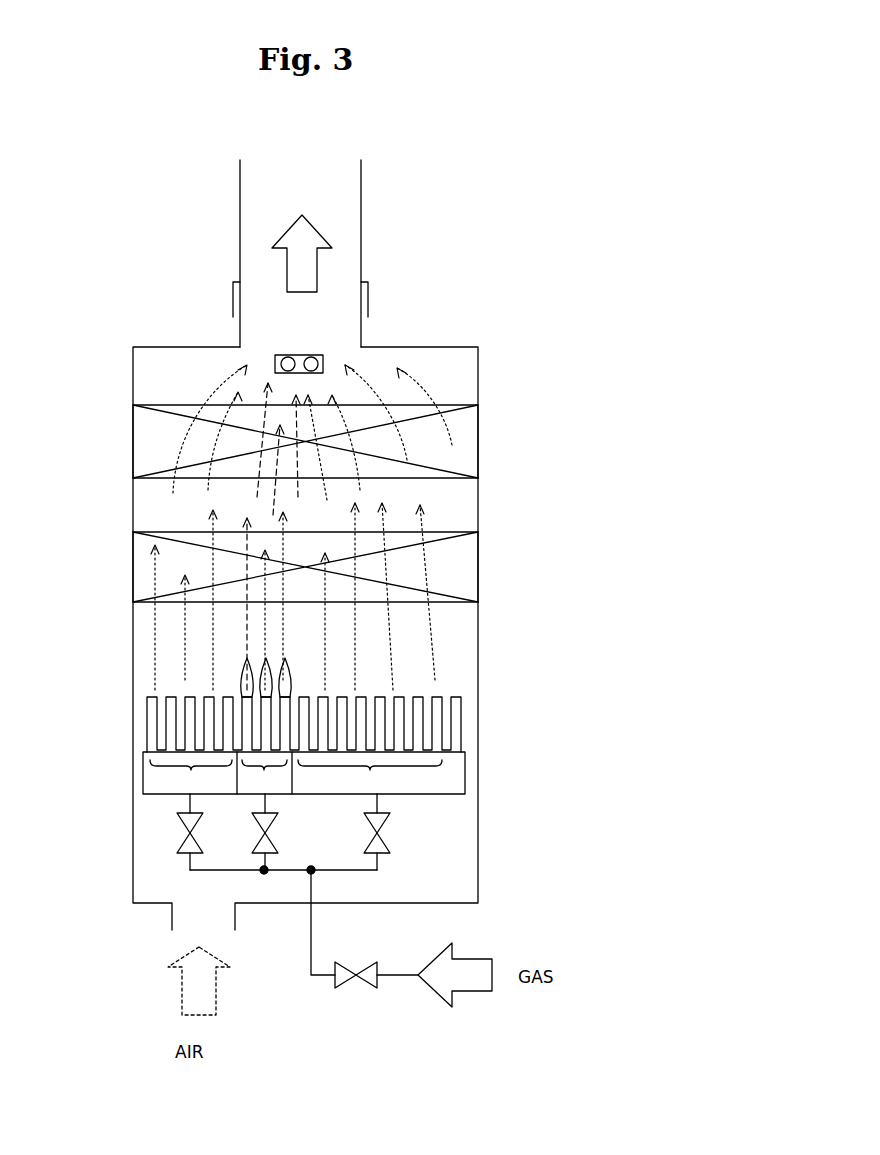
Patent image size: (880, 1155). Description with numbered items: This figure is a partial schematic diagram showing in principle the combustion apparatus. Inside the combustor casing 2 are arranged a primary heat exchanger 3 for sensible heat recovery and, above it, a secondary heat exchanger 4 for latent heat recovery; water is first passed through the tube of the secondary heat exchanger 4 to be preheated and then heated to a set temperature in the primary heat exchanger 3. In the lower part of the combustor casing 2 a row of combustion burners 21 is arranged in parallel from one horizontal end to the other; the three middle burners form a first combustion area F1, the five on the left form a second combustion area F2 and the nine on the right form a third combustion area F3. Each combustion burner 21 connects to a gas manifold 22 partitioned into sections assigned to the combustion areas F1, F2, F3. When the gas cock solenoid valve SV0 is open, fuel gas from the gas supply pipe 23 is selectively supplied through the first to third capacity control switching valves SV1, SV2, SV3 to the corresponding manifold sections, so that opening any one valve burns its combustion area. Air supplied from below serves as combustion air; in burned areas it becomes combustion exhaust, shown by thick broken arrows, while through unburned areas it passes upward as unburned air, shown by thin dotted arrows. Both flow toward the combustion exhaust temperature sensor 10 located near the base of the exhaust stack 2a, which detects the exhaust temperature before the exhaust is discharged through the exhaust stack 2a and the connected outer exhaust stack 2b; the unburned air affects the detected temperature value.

The combustor casing 2 is at (133, 508).
The exhaust stack 2a is at (361, 340).
The outer exhaust stack 2b is at (361, 260).
The primary heat exchanger 3 is at (452, 603).
The secondary heat exchanger 4 is at (453, 480).
The combustion exhaust temperature sensor 10 is at (285, 352).
The combustion burners 21 is at (187, 708).
The gas manifold 22 is at (465, 772).
The gas supply pipe 23 is at (311, 960).
The gas cock solenoid valve SV0 is at (365, 982).
The first capacity control switching valve SV1 is at (272, 838).
The second capacity control switching valve SV2 is at (183, 840).
The third capacity control switching valve SV3 is at (387, 825).
The first combustion area F1 is at (264, 777).
The second combustion area F2 is at (191, 777).
The third combustion area F3 is at (370, 777).